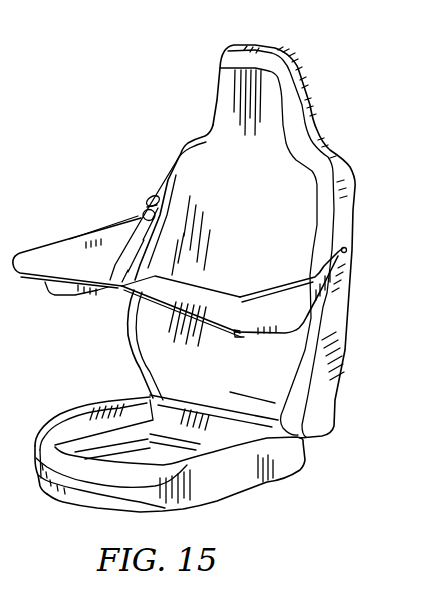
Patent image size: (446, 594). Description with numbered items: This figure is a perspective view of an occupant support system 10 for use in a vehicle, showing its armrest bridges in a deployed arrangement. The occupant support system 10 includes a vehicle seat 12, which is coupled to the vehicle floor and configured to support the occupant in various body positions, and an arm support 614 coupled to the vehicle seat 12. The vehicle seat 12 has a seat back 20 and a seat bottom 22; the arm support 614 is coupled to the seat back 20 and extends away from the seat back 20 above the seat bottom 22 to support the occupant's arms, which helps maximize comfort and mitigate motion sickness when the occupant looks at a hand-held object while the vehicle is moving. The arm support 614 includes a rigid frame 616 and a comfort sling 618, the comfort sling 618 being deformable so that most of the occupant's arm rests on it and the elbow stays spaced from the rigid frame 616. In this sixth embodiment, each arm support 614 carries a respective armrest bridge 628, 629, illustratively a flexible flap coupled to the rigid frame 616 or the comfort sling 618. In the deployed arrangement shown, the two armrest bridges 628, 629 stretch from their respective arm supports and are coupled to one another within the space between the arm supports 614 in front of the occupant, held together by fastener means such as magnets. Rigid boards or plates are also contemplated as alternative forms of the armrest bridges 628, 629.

The occupant support system 10 is at (80, 90).
The vehicle seat 12 is at (184, 132).
The seat back 20 is at (323, 173).
The seat bottom 22 is at (87, 467).
The arm support 614 is at (82, 213).
The rigid frame 616 is at (146, 197).
The comfort sling 618 is at (280, 285).
The armrest bridge 628 is at (184, 297).
The armrest bridge 629 is at (60, 266).